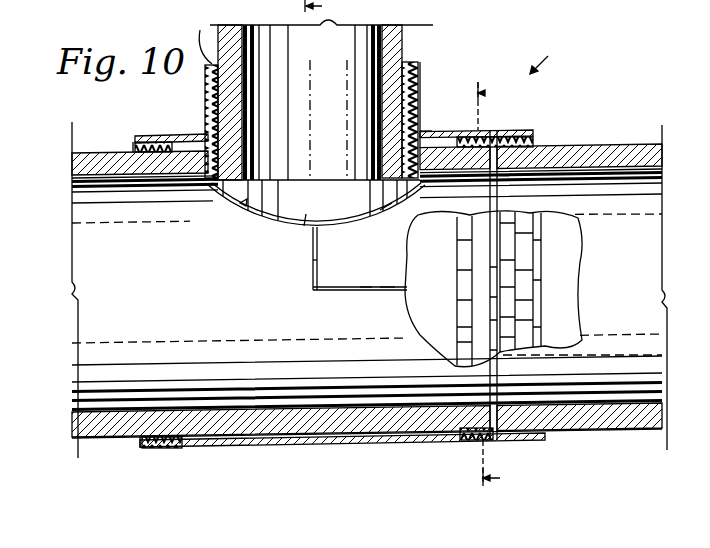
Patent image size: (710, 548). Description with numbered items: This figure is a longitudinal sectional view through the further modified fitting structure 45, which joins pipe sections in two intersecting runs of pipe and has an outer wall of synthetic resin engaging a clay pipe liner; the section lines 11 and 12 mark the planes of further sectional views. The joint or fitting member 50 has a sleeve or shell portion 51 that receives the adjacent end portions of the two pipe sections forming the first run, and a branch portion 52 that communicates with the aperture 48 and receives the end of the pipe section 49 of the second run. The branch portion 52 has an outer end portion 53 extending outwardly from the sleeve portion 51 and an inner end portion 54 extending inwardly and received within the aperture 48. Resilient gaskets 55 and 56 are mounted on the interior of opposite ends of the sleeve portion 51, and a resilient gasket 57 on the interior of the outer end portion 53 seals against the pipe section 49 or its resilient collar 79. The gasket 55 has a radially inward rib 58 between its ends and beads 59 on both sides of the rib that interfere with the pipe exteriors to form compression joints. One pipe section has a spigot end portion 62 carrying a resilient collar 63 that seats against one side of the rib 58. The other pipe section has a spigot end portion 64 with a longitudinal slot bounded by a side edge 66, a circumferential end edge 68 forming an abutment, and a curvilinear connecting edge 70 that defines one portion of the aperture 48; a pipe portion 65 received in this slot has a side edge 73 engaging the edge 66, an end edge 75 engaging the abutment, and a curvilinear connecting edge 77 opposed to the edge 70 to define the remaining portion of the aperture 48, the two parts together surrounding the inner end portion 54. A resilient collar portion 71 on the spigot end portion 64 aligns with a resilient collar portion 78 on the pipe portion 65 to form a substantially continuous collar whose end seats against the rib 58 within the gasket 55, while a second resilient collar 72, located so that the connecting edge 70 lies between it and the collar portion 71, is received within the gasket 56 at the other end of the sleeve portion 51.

The section line 11- 11 is at (503, 286).
The section line 12- 12 is at (327, 8).
The fitting structure 45 is at (549, 56).
The aperture 48 is at (246, 203).
The pipe section 49 is at (402, 40).
The joint or fitting member 50 is at (199, 134).
The sleeve or shell portion 51 is at (425, 132).
The branch portion 52 is at (420, 65).
The outer end portion 53 is at (420, 100).
The inner end portion 54 is at (305, 222).
The resilient gasket 55 is at (533, 135).
The resilient gasket 56 is at (132, 146).
The resilient gasket 57 is at (212, 64).
The rib 58 is at (498, 298).
The beads 59 is at (552, 255).
The spigot end portion 62 is at (612, 145).
The resilient collar 63 is at (535, 142).
The spigot end portion 64 is at (333, 440).
The pipe portion 65 is at (333, 290).
The first or side edge 66 is at (366, 290).
The second or end edge 68 is at (316, 268).
The connecting edge 70 is at (268, 220).
The resilient collar portion 71 is at (453, 440).
The second resilient collar 72 is at (133, 146).
The side edge 73 is at (386, 288).
The end edge 75 is at (318, 262).
The connecting edge 77 is at (392, 203).
The resilient collar portion 78 is at (462, 142).
The resilient collar 79 is at (205, 35).